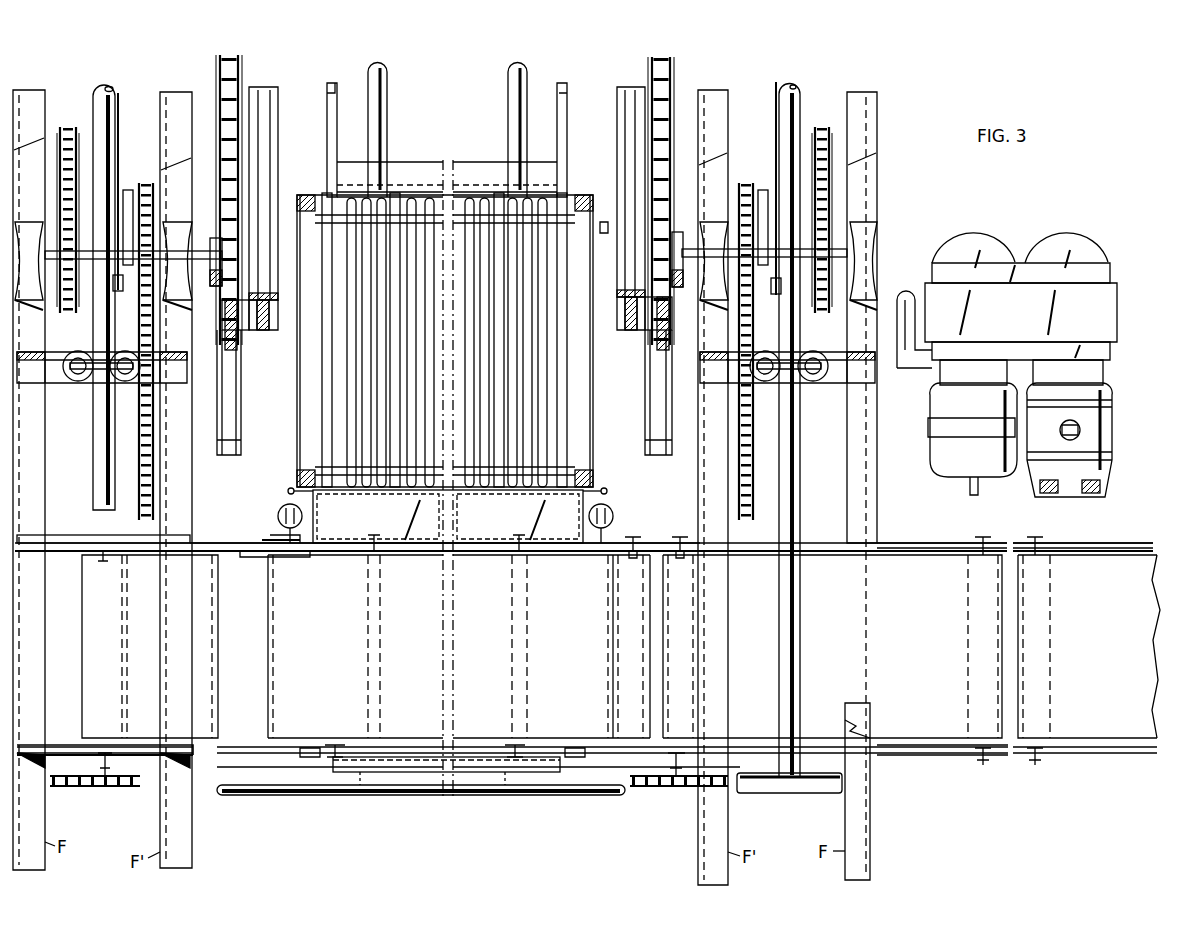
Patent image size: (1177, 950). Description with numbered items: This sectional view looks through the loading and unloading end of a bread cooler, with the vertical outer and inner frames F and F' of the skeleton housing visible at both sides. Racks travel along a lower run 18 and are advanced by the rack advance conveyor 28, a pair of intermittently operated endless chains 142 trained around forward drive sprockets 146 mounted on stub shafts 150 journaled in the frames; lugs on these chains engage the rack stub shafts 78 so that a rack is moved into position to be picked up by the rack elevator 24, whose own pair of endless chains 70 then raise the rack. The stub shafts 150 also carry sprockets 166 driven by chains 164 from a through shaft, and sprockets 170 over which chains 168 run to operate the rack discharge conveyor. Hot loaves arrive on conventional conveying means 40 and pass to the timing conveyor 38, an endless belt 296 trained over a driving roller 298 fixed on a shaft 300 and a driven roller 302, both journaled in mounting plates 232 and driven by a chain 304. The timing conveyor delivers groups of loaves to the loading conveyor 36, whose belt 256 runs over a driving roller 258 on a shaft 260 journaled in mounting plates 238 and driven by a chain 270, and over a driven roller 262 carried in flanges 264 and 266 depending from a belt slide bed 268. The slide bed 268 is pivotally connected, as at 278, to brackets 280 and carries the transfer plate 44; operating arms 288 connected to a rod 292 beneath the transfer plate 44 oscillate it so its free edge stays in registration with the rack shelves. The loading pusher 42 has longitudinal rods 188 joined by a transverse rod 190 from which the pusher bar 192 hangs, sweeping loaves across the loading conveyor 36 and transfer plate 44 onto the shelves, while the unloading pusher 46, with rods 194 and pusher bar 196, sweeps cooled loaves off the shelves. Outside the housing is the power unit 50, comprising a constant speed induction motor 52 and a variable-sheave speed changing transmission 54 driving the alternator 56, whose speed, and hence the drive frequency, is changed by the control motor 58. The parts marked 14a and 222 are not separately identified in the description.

The grate frame 14a is at (297, 428).
The lower run 18 is at (284, 120).
The rack elevator 24 is at (241, 412).
The rack advance conveyor 28 is at (247, 64).
The loading conveyor 36 is at (206, 534).
The timing conveyor 38 is at (936, 538).
The conveying means 40 is at (1110, 538).
The loading pusher 42 is at (737, 782).
The transfer plate 44 is at (613, 510).
The unloading pusher 46 is at (466, 154).
The power unit 50 is at (1014, 254).
The constant speed induction motor 52 is at (935, 470).
The variable-sheave speed changing transmission 54 is at (1117, 320).
The alternator 56 is at (1110, 445).
The control motor 58 is at (905, 292).
The endless chains 70 is at (226, 345).
The rack stub shafts 78 is at (225, 330).
The endless chains 142 is at (218, 72).
The forward drive sprockets 146 is at (222, 240).
The stub shafts 150 is at (48, 280).
The chains 164 is at (146, 190).
The sprockets 166 is at (127, 190).
The chains 168 is at (73, 125).
The sprockets 170 is at (64, 130).
The longitudinally extending rods 188 is at (93, 456).
The transversely extending rod 190 is at (375, 795).
The pusher bar 192 is at (290, 765).
The longitudinally extending rods 194 is at (508, 100).
The pusher bar 196 is at (535, 187).
The rod 222 is at (119, 120).
The mounting plates 232 is at (968, 545).
The mounting plates 238 is at (66, 543).
The endless belt 256 is at (278, 538).
The driving roller 258 is at (100, 558).
The shaft 260 is at (72, 746).
The driven roller 262 is at (636, 540).
The flange 264 is at (560, 772).
The flange 266 is at (262, 548).
The belt slide bed 268 is at (283, 530).
The chain 270 is at (100, 790).
The pivotal connection 278 is at (310, 748).
The brackets 280 is at (334, 743).
The operating arms 288 is at (289, 488).
The transversely extending rod 292 is at (313, 545).
The endless belt 296 is at (913, 755).
The driving roller 298 is at (678, 533).
The shaft 300 is at (656, 770).
The driven roller 302 is at (1000, 548).
The chain 304 is at (678, 790).